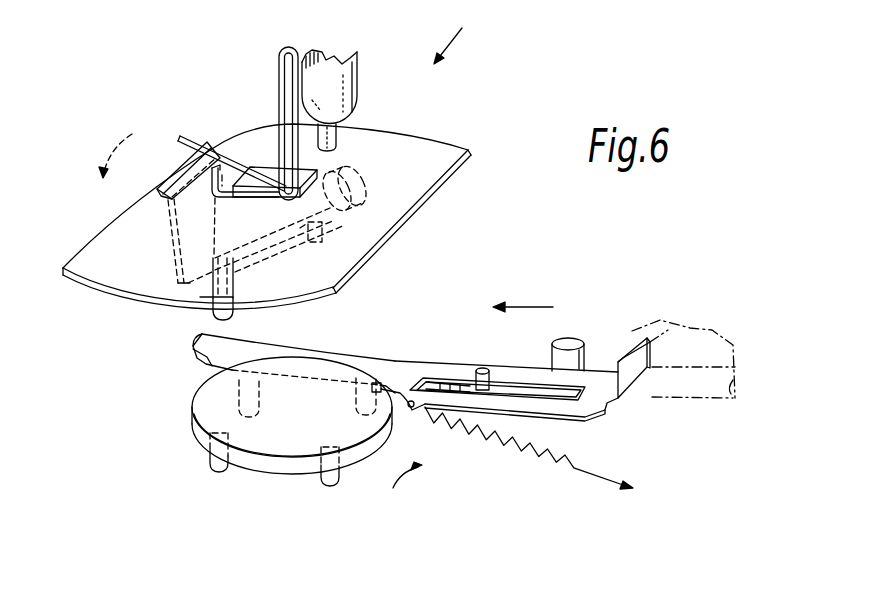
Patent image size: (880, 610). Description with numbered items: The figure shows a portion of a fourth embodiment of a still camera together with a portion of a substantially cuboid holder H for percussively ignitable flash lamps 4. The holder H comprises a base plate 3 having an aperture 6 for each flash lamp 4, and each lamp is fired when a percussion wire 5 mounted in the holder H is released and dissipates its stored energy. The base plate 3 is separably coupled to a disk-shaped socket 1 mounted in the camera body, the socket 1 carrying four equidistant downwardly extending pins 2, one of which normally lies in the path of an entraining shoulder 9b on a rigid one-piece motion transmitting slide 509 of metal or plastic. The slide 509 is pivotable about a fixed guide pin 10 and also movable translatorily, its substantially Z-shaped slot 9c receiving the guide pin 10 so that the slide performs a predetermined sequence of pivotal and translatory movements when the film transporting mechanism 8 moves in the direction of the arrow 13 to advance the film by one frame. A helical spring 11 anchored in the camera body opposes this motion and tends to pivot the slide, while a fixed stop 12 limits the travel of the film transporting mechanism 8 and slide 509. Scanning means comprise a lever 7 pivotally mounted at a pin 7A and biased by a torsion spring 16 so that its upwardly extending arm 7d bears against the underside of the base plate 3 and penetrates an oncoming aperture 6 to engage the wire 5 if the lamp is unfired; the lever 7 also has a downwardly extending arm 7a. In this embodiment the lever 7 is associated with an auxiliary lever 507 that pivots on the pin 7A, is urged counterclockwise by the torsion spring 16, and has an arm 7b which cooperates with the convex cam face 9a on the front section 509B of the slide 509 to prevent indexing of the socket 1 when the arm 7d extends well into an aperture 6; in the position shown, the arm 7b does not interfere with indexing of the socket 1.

The socket 1 is at (272, 469).
The pins 2 is at (238, 398).
The base plate 3 is at (86, 266).
The flash lamp 4 is at (357, 92).
The percussion wire 5 is at (200, 140).
The aperture 6 is at (160, 186).
The scanning lever 7 is at (165, 270).
The arm 7a is at (202, 301).
The arm 7b is at (244, 297).
The arm 7d is at (176, 243).
The pin 7A is at (360, 196).
The film transporting mechanism 8 is at (655, 326).
The cam face 9a is at (214, 334).
The shoulder 9b is at (394, 375).
The slot 9c is at (518, 383).
The guide pin 10 is at (480, 368).
The helical spring 11 is at (523, 458).
The stop 12 is at (572, 340).
The arrow 13 is at (549, 307).
The torsion spring 16 is at (322, 230).
The auxiliary lever 507 is at (322, 194).
The motion transmitting slide 509 is at (436, 372).
The front section 509B is at (243, 353).
The holder H is at (458, 41).